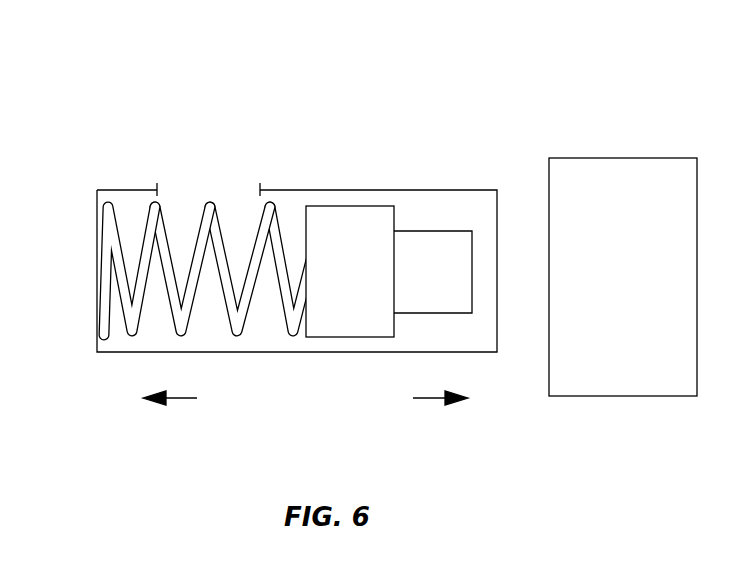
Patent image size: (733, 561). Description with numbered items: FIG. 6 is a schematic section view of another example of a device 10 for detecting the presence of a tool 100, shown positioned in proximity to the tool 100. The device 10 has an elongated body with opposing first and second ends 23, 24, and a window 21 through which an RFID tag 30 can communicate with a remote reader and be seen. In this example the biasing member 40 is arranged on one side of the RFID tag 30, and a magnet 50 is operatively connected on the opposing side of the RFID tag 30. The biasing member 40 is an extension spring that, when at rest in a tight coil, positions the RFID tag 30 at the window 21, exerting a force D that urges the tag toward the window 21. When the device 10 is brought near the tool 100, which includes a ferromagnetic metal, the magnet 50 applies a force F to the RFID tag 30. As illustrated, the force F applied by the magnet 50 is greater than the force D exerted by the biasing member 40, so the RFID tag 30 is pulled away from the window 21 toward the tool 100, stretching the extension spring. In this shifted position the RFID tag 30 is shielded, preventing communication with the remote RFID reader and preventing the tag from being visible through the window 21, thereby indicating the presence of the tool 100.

The device 10 is at (117, 131).
The window 21 is at (222, 175).
The first end 23 is at (93, 318).
The second end 24 is at (497, 208).
The RFID tag 30 is at (350, 262).
The biasing member 40 is at (177, 303).
The magnet 50 is at (418, 293).
The tool 100 is at (608, 291).
The force exerted by the biasing member D is at (180, 400).
The force applied by the magnet F is at (432, 401).